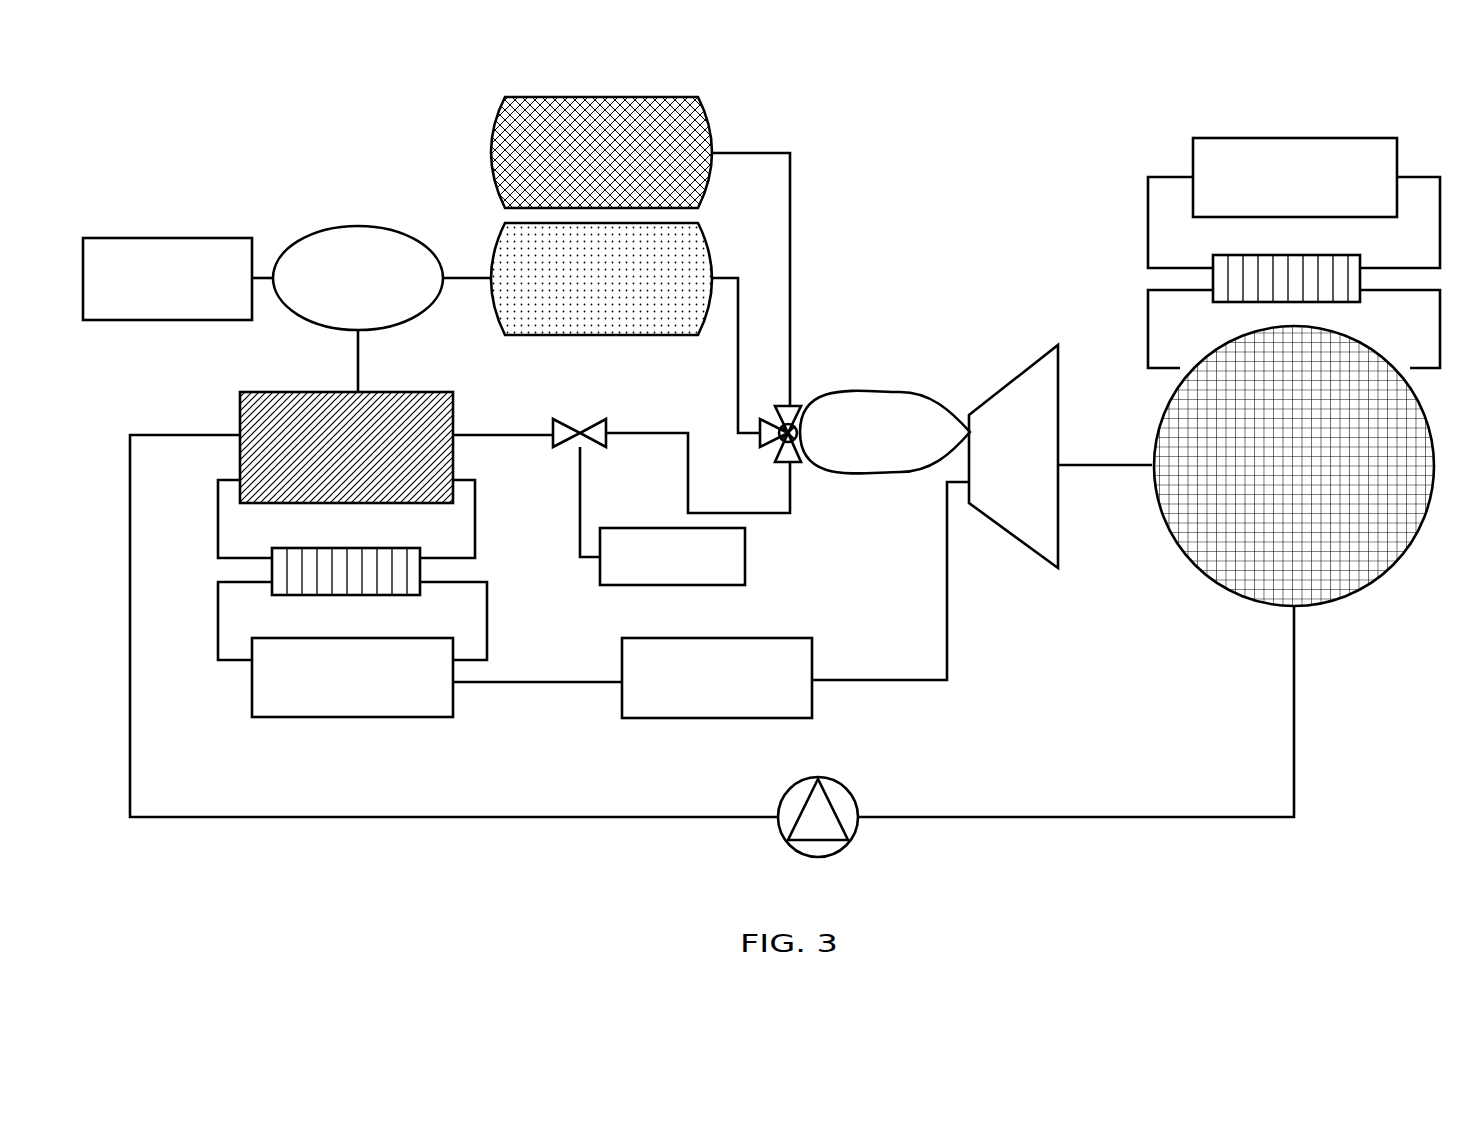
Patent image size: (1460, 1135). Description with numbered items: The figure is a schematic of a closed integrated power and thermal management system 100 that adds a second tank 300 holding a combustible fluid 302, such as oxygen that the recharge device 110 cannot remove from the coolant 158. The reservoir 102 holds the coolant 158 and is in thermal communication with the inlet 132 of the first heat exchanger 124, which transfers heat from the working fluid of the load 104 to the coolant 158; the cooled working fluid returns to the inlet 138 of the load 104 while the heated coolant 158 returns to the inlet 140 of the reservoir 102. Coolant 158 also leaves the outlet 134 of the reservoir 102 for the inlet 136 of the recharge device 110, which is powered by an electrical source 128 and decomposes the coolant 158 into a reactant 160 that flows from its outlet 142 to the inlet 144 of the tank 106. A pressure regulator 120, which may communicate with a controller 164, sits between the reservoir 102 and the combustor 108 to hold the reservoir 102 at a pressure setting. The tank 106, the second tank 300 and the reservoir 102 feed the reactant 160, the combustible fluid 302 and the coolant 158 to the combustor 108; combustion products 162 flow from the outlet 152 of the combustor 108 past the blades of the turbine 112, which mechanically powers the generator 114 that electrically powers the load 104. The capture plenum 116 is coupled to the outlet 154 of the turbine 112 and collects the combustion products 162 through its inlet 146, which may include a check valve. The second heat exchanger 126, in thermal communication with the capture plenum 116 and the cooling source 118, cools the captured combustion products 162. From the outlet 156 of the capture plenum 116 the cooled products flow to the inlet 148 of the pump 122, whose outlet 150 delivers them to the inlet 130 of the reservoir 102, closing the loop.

The closed integrated power and thermal management system 100 is at (1330, 750).
The reservoir 102 is at (283, 392).
The load 104 is at (272, 717).
The tank 106 is at (575, 335).
The combustor 108 is at (835, 473).
The recharge device 110 is at (290, 245).
The turbine 112 is at (1040, 563).
The generator 114 is at (640, 718).
The capture plenum 116 is at (1390, 568).
The cooling source 118 is at (1293, 138).
The pressure regulator 120 is at (580, 425).
The pump 122 is at (822, 779).
The first heat exchanger 124 is at (420, 572).
The second heat exchanger 126 is at (1213, 278).
The electrical source 128 is at (153, 238).
The inlet of the reservoir 130 is at (240, 435).
The inlet of the first heat exchanger 132 is at (272, 558).
The outlet of the reservoir 134 is at (360, 390).
The inlet of the recharge device 136 is at (358, 330).
The inlet of the load 138 is at (248, 662).
The inlet of the reservoir 140 is at (453, 490).
The outlet of the recharge device 142 is at (443, 270).
The inlet of the tank 144 is at (492, 278).
The inlet of the capture plenum 146 is at (1152, 482).
The inlet of the pump 148 is at (848, 828).
The outlet of the pump 150 is at (793, 828).
The outlet of the combustor 152 is at (968, 430).
The outlet of the turbine 154 is at (1058, 438).
The outlet of the capture plenum 156 is at (1293, 607).
The coolant 158 is at (330, 455).
The reactant 160 is at (610, 280).
The combustion products 162 is at (1303, 530).
The controller 164 is at (678, 585).
The second tank 300 is at (505, 97).
The combustible fluid 302 is at (645, 125).